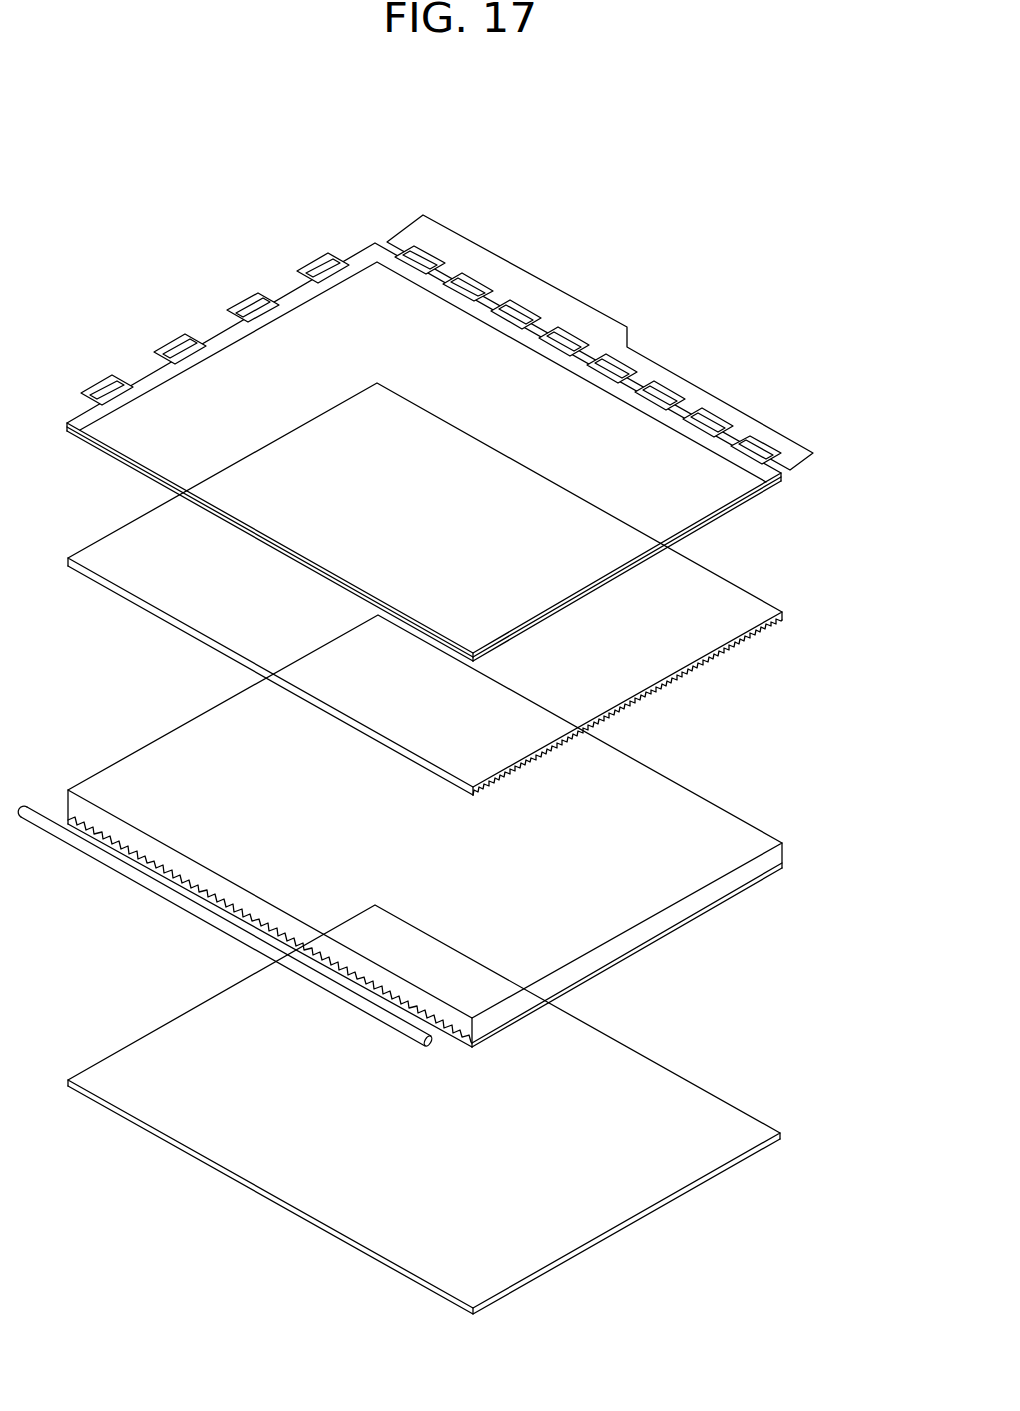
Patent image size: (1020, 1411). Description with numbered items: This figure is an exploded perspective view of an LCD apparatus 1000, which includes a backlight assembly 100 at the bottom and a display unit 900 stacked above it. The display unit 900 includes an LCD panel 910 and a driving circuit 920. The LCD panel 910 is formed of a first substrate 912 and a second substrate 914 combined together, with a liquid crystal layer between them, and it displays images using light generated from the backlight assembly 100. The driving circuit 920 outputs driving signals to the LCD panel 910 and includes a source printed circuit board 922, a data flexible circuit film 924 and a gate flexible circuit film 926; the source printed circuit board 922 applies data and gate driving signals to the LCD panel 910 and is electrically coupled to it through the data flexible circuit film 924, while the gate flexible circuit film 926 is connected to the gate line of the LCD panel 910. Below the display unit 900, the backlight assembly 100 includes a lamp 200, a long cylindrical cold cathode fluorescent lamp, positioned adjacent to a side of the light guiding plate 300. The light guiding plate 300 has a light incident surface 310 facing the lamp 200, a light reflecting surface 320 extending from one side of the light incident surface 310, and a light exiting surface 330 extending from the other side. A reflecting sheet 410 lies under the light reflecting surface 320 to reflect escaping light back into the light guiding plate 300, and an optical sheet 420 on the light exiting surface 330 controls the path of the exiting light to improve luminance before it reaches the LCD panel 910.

The LCD apparatus 1000 is at (243, 165).
The display unit 900 is at (168, 292).
The LCD panel 910 is at (817, 509).
The first substrate 912 is at (732, 494).
The second substrate 914 is at (737, 493).
The driving circuit 920 is at (572, 204).
The source printed circuit board 922 is at (483, 263).
The data flexible circuit film 924 is at (433, 259).
The gate flexible circuit film 926 is at (325, 258).
The backlight assembly 100 is at (788, 592).
The optical sheet 420 is at (118, 512).
The light guiding plate 300 is at (161, 722).
The light incident surface 310 is at (67, 800).
The light reflecting surface 320 is at (638, 950).
The light exiting surface 330 is at (677, 887).
The lamp 200 is at (107, 878).
The reflecting sheet 410 is at (165, 1006).